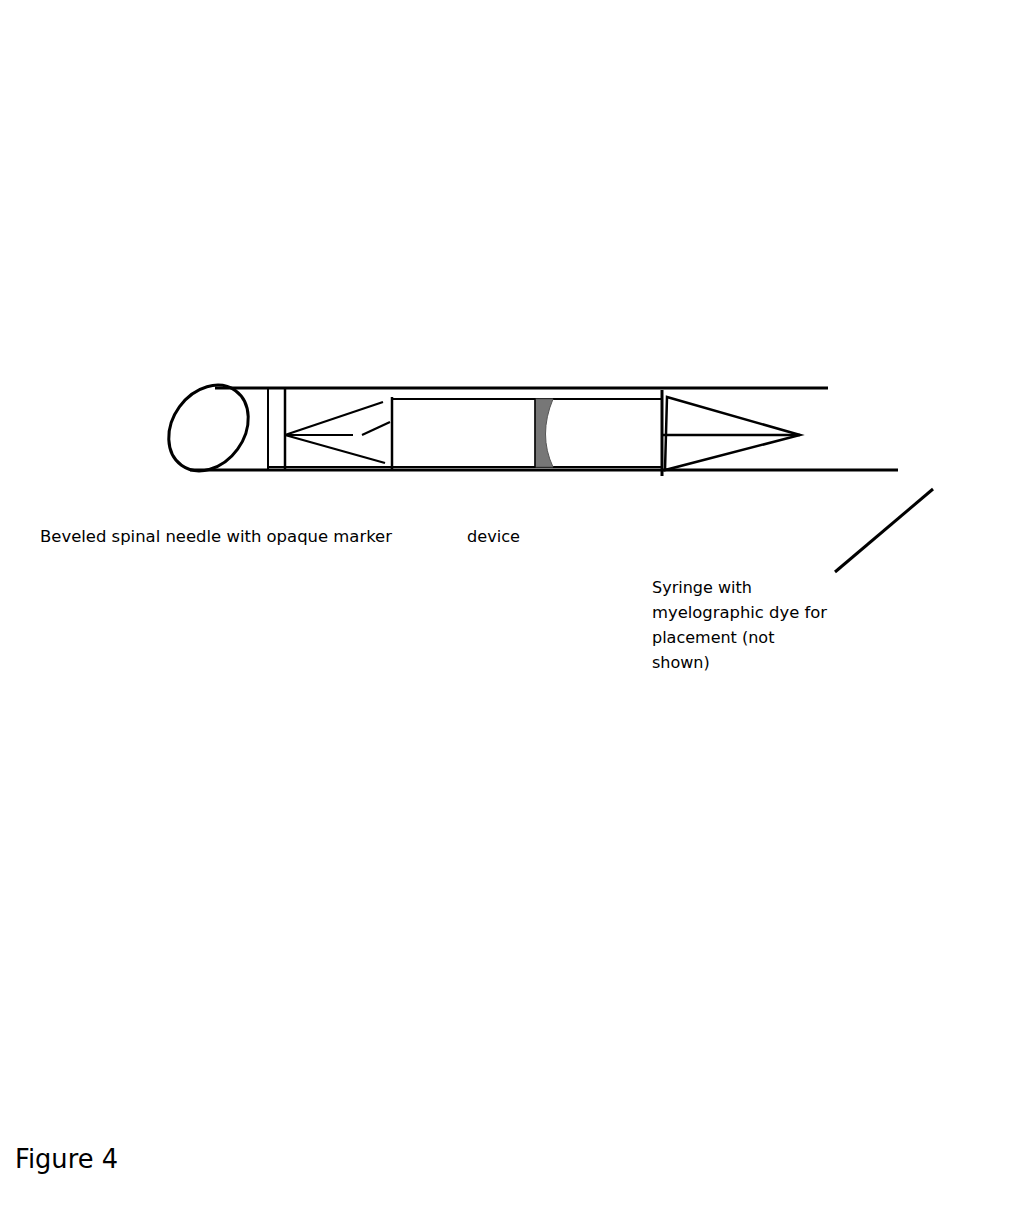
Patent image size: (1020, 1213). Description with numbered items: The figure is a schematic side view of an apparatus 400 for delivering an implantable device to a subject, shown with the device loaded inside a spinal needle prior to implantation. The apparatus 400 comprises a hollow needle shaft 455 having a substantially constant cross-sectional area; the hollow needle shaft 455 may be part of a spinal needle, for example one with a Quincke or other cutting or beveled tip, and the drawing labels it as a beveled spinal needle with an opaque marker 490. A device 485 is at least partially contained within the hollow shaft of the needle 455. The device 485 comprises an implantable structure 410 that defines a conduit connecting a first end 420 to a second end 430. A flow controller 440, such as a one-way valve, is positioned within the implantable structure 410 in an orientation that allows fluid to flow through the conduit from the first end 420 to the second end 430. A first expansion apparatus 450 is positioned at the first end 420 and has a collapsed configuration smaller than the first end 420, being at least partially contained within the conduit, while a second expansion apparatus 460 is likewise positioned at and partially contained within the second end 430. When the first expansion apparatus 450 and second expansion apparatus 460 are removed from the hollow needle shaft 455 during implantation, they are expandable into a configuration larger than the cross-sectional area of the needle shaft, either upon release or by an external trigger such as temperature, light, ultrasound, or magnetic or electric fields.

The apparatus 400 is at (835, 98).
The implantable structure 410 is at (450, 392).
The first end 420 is at (378, 487).
The second end 430 is at (608, 444).
The flow controller 440 is at (553, 388).
The first expansion apparatus 450 is at (361, 392).
The hollow needle shaft 455 is at (195, 376).
The second expansion apparatus 460 is at (725, 415).
The device 485 is at (458, 498).
The opaque marker 490 is at (276, 382).